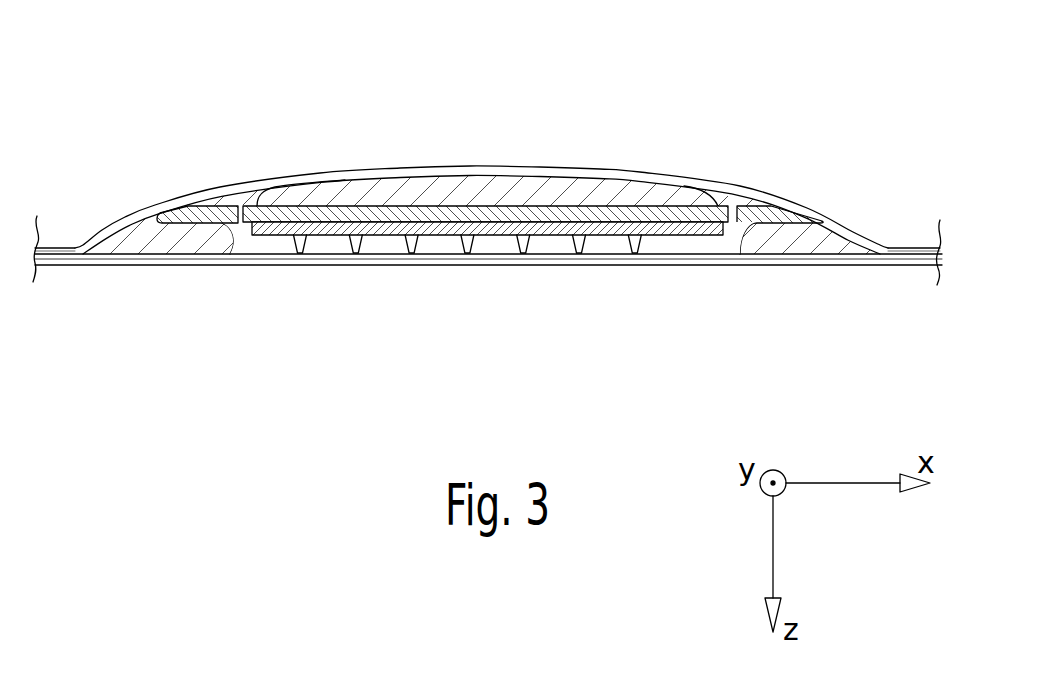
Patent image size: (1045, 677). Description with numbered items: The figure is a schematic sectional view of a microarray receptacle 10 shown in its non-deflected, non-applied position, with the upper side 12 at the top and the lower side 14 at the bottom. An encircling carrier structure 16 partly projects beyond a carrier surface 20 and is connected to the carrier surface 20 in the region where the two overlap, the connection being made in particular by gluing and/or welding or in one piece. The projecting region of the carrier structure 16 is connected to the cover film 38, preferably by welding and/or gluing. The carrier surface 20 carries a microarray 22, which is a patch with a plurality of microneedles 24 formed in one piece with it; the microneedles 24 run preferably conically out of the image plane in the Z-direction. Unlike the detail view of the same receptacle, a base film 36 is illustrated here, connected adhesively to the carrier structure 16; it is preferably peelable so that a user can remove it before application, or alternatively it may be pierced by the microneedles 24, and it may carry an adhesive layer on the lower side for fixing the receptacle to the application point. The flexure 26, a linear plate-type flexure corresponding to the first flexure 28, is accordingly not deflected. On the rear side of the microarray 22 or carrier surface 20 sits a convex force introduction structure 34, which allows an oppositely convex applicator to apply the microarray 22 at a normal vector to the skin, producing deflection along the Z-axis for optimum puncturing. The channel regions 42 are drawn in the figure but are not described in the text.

The microarray receptacle 10 is at (695, 100).
The upper side 12 is at (391, 136).
The lower side 14 is at (590, 288).
The carrier structure 16 is at (837, 238).
The carrier surface 20 is at (492, 212).
The microarray 22 is at (387, 268).
The microneedles 24 is at (476, 236).
The flexure 26 is at (211, 235).
The first flexure 28 is at (220, 213).
The convex force introduction structure 34 is at (601, 190).
The base film 36 is at (667, 266).
The cover film 38 is at (255, 183).
The channel 42 is at (732, 220).